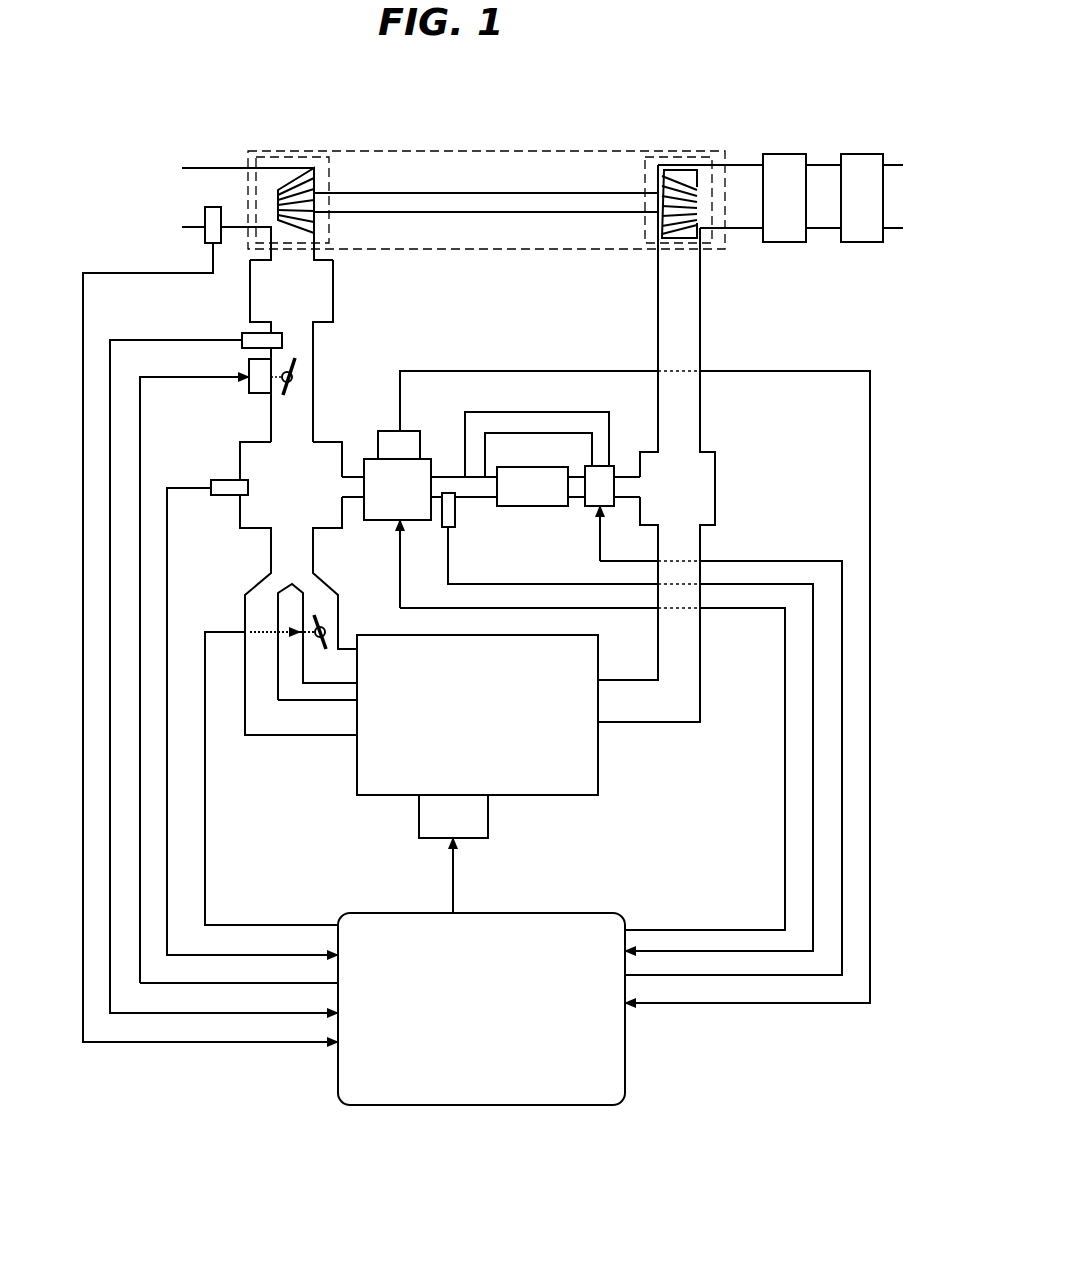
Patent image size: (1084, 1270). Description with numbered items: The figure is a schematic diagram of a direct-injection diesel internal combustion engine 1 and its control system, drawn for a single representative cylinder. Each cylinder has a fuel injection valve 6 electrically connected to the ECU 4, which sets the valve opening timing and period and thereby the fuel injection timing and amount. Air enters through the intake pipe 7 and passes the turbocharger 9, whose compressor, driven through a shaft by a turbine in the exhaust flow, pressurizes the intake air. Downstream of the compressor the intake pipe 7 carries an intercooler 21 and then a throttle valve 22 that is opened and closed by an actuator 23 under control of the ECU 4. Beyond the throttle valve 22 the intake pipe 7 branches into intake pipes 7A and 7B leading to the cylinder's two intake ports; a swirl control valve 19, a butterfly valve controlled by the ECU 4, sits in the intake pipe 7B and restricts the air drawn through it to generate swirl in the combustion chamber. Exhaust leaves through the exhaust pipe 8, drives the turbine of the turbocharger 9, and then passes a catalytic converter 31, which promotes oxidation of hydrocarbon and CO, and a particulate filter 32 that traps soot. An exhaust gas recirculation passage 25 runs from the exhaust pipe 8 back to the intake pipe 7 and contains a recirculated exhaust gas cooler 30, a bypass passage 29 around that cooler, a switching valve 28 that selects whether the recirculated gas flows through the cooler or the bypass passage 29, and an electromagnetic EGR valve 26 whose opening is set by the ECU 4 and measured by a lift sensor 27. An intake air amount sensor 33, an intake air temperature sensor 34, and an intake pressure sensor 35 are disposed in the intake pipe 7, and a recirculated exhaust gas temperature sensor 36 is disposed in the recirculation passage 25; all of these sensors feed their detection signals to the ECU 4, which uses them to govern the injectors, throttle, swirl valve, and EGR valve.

The internal combustion engine 1 is at (357, 756).
The electronic control unit 4 is at (543, 913).
The fuel injection valve 6 is at (488, 820).
The intake pipe 7 is at (270, 412).
The intake pipe 7A is at (252, 737).
The intake pipe 7B is at (340, 615).
The exhaust pipe 8 is at (658, 316).
The turbocharger 9 is at (380, 152).
The swirl control valve 19 is at (325, 622).
The intercooler 21 is at (334, 280).
The throttle valve 22 is at (300, 364).
The actuator 23 is at (250, 388).
The exhaust gas recirculation passage 25 is at (484, 498).
The exhaust gas recirculation control valve 26 is at (395, 522).
The lift sensor 27 is at (392, 431).
The switching valve 28 is at (598, 508).
The bypass passage 29 is at (572, 412).
The recirculated exhaust gas cooler 30 is at (510, 467).
The catalytic converter 31 is at (785, 154).
The particulate filter 32 is at (863, 154).
The intake air amount sensor 33 is at (213, 207).
The intake air temperature sensor 34 is at (250, 333).
The intake pressure sensor 35 is at (232, 480).
The recirculated exhaust gas temperature sensor 36 is at (444, 528).